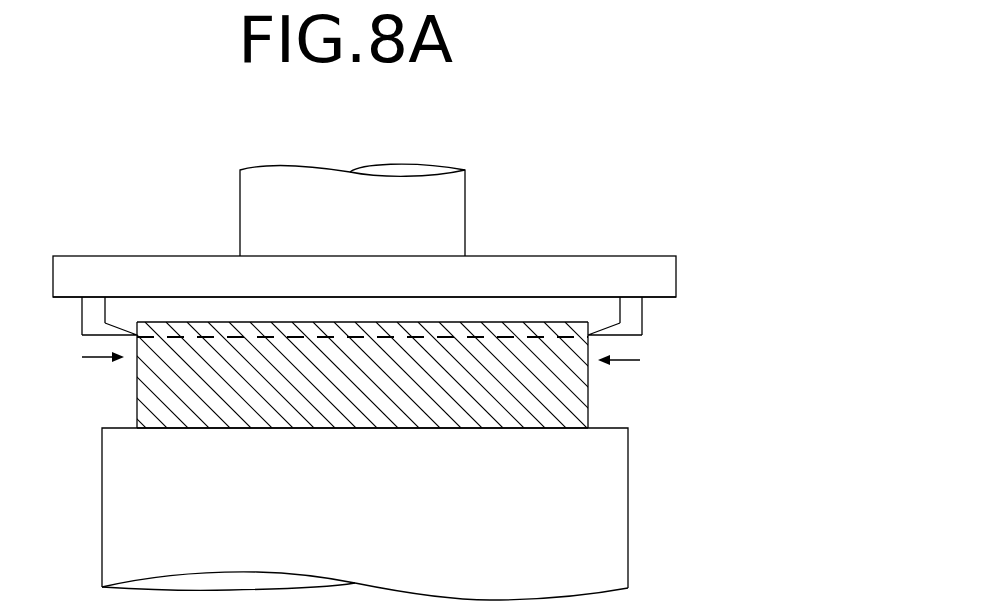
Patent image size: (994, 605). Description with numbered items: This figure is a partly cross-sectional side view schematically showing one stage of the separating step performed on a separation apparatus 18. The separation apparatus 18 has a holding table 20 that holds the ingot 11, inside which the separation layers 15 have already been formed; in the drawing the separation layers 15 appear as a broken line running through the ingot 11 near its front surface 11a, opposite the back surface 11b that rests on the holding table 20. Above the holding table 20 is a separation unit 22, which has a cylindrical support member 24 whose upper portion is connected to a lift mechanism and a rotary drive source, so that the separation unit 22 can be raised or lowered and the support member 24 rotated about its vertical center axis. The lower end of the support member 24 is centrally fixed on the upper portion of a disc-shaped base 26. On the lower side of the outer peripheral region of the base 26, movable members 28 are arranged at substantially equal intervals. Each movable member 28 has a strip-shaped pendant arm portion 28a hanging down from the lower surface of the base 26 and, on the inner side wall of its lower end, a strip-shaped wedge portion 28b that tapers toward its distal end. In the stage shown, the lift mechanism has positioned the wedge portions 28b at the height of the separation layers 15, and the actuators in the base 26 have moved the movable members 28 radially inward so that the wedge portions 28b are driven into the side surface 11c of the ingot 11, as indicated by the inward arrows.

The ingot 11 is at (361, 358).
The front surface 11a is at (530, 322).
The back surface 11b is at (515, 430).
The side surface 11c is at (588, 400).
The separation layer 15 is at (283, 340).
The separation apparatus 18 is at (406, 184).
The holding table 20 is at (615, 532).
The separation unit 22 is at (406, 242).
The support member 24 is at (457, 208).
The base 26 is at (200, 263).
The movable member 28 is at (441, 337).
The pendant arm portion 28a is at (644, 318).
The wedge portion 28b is at (615, 338).